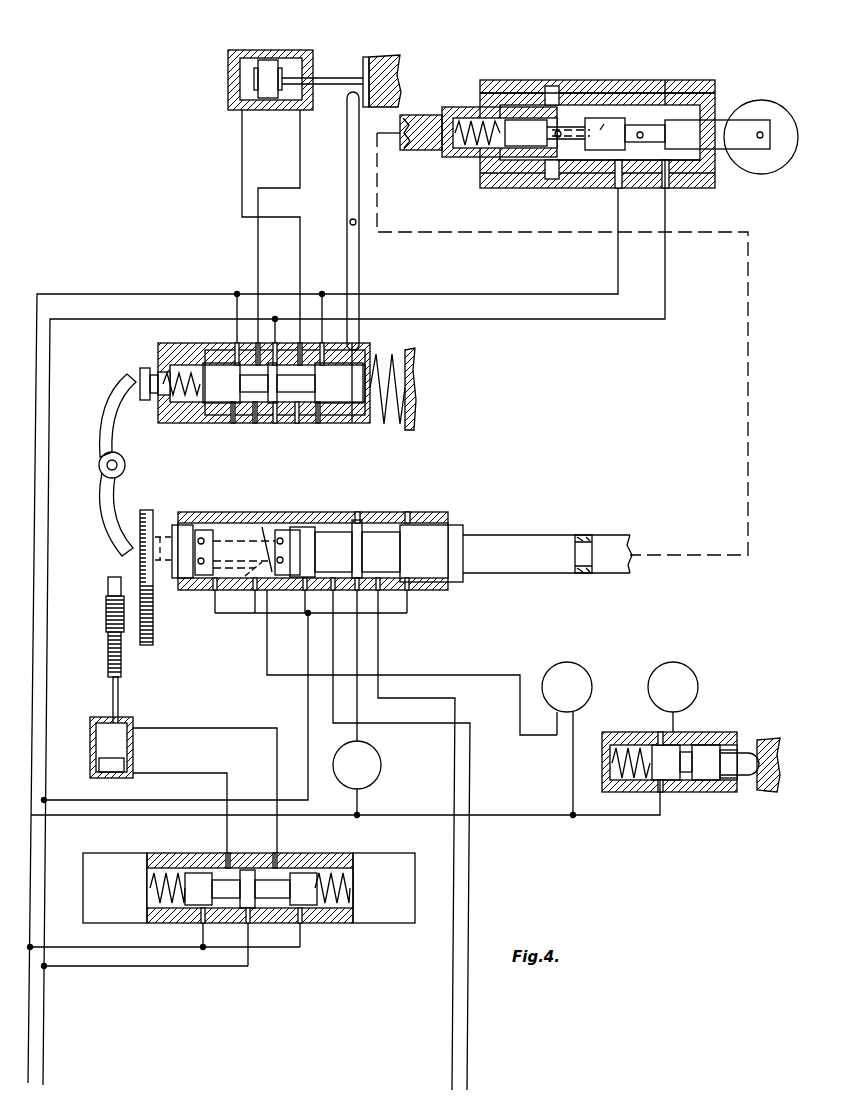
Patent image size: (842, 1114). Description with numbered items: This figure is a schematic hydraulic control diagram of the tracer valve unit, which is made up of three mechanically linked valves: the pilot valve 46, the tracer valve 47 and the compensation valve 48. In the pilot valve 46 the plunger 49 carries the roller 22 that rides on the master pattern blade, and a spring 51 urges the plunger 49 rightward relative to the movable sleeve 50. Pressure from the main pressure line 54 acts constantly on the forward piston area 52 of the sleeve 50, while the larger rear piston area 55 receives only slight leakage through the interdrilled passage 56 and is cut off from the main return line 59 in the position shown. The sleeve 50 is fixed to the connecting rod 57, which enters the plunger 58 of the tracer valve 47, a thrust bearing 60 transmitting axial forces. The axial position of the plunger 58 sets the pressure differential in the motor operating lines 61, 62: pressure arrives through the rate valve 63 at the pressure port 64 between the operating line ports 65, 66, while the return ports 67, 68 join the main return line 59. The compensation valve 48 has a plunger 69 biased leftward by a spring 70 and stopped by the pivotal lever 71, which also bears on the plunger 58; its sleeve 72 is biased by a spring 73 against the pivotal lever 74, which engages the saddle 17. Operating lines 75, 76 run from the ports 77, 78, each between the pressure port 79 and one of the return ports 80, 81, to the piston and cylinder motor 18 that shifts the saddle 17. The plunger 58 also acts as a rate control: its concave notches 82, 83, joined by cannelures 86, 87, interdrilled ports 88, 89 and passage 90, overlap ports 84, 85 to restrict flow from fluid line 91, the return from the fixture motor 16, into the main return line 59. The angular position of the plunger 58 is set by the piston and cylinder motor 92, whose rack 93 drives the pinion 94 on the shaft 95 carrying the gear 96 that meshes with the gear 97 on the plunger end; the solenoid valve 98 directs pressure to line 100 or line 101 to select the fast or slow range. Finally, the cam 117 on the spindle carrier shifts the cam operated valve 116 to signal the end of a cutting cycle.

The fixture motor 16 is at (650, 738).
The saddle 17 is at (375, 55).
The piston and cylinder motor 18 is at (252, 50).
The roller 22 is at (770, 100).
The pilot valve 46 is at (620, 131).
The tracer valve 47 is at (393, 557).
The compensation valve 48 is at (274, 391).
The plunger 49 is at (738, 144).
The movable sleeve 50 is at (600, 180).
The spring 51 is at (460, 107).
The forward piston area 52 is at (668, 80).
The main pressure line 54 is at (43, 1052).
The rear piston area 55 is at (540, 80).
The interdrilled passage 56 is at (603, 118).
The connecting rod 57 is at (425, 152).
The plunger 58 is at (468, 535).
The main return line 59 is at (92, 294).
The thrust bearing 60 is at (585, 573).
The motor operating line 61 is at (420, 726).
The motor operating line 62 is at (458, 702).
The rate valve 63 is at (374, 780).
The pressure port 64 is at (360, 518).
The operating line port 65 is at (331, 578).
The operating line port 66 is at (378, 578).
The return port 67 is at (305, 600).
The return port 68 is at (409, 600).
The plunger 69 is at (348, 392).
The spring 70 is at (144, 368).
The pivotal lever 71 is at (126, 459).
The sleeve 72 is at (356, 423).
The spring 73 is at (385, 356).
The pivotal lever 74 is at (360, 282).
The operating line 75 is at (250, 258).
The operating line 76 is at (300, 252).
The port 77 is at (256, 343).
The port 78 is at (298, 347).
The pressure port 79 is at (256, 423).
The return port 80 is at (232, 423).
The return port 81 is at (318, 423).
The concave notch 82 is at (232, 530).
The concave notch 83 is at (266, 527).
The port 84 is at (212, 590).
The port 85 is at (258, 600).
The cannelure 86 is at (198, 538).
The cannelure 87 is at (290, 530).
The interdrilled port 88 is at (203, 558).
The interdrilled port 89 is at (284, 541).
The passage 90 is at (241, 571).
The fluid line 91 is at (265, 668).
The piston and cylinder motor 92 is at (90, 755).
The rack 93 is at (108, 668).
The pinion 94 is at (106, 622).
The rotatable shaft 95 is at (124, 630).
The gear 96 is at (154, 640).
The gear 97 is at (122, 552).
The solenoid valve 98 is at (222, 899).
The line 100 is at (277, 845).
The line 101 is at (228, 850).
The cam operated valve 116 is at (656, 735).
The cam 117 is at (762, 740).